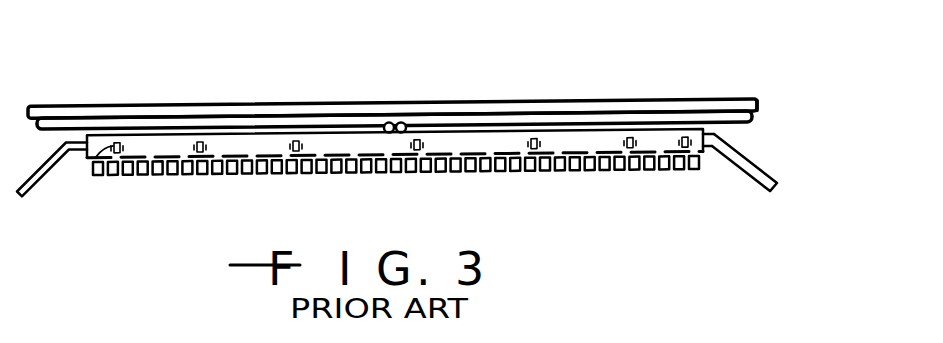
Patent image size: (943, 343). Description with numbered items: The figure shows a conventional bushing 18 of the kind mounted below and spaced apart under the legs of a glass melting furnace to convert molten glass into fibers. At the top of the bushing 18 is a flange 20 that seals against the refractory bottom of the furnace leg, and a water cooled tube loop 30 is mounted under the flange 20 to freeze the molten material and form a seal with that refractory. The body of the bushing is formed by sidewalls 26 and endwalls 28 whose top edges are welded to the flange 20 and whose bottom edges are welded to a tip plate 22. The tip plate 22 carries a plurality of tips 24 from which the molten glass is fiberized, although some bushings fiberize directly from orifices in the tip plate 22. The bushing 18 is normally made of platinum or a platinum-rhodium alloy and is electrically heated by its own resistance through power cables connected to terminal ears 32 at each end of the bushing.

The bushing 18 is at (512, 92).
The flange 20 is at (758, 98).
The tip plate 22 is at (707, 152).
The tips 24 is at (649, 170).
The sidewalls 26 is at (90, 165).
The endwalls 28 is at (716, 138).
The water cooled tube loop 30 is at (777, 97).
The terminal ears 32 is at (778, 176).